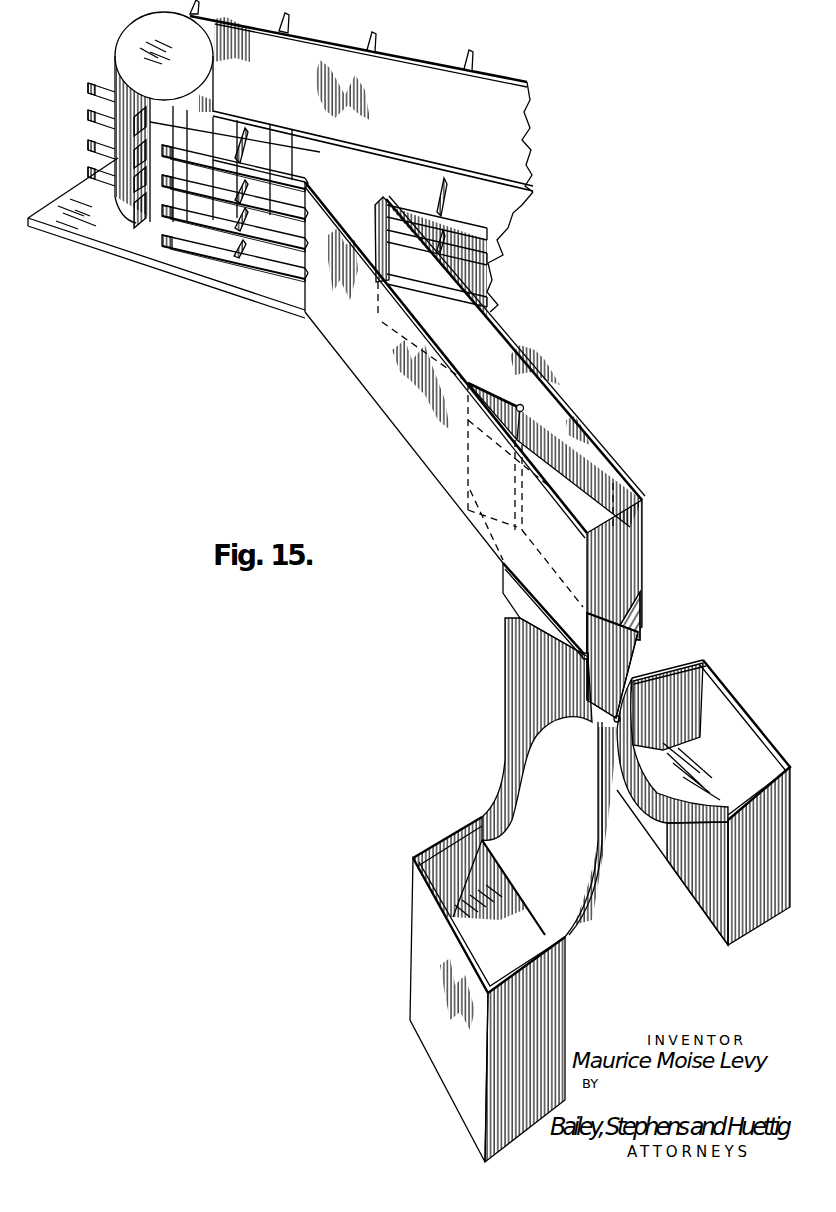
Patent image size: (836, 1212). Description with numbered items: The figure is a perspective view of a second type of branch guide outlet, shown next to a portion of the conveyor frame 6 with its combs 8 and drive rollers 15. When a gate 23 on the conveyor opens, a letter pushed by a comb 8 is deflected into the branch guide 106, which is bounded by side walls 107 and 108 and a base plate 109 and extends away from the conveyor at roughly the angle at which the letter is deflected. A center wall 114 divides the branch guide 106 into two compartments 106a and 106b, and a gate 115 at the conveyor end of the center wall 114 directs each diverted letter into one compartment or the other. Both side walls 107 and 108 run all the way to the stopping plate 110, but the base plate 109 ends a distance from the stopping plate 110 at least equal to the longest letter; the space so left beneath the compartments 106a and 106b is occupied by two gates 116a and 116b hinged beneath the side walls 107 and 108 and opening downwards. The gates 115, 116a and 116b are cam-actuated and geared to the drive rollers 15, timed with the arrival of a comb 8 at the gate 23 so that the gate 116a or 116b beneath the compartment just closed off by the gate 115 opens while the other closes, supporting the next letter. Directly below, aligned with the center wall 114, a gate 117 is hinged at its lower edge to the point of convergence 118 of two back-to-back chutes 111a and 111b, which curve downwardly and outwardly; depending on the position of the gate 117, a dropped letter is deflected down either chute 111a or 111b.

The frame wall 6 is at (434, 57).
The comb 8 is at (101, 83).
The drive rollers 15 is at (193, 66).
The gate 23 is at (378, 197).
The branch guide 106 is at (469, 508).
The compartment 106a is at (553, 470).
The compartment 106b is at (583, 453).
The side wall 107 is at (517, 373).
The side wall 108 is at (427, 400).
The base plate 109 is at (481, 338).
The stopping plate 110 is at (628, 553).
The chute 111a is at (530, 789).
The chute 111b is at (668, 790).
The center wall 114 is at (580, 500).
The gate 115 is at (507, 403).
The gate 116a is at (514, 597).
The gate 116b is at (639, 638).
The gate 117 is at (619, 663).
The point of convergence 118 is at (614, 720).